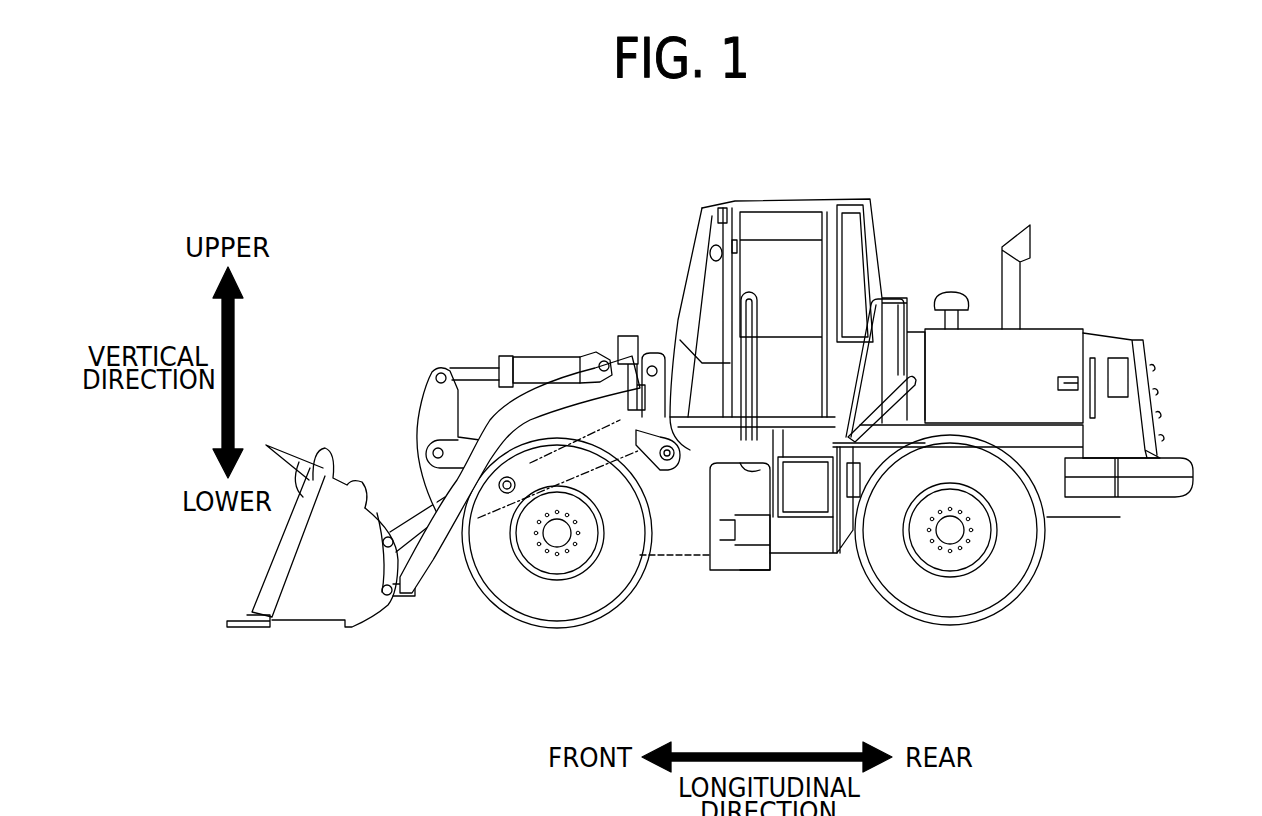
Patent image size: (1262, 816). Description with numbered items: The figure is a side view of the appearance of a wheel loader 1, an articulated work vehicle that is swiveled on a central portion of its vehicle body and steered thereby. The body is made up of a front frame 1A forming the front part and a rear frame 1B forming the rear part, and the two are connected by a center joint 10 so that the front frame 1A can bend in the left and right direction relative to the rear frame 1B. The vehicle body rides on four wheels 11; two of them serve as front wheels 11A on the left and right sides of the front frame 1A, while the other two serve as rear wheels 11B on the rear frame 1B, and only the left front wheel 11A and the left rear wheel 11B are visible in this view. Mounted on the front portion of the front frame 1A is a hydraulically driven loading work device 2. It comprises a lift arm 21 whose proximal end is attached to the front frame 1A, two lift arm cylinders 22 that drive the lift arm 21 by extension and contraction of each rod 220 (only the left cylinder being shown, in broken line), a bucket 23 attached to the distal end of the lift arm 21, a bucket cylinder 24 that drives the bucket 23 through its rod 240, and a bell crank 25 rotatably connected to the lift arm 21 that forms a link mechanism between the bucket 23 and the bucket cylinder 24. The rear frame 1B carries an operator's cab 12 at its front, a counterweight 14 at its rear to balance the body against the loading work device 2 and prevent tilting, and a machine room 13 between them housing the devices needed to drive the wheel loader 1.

The wheel loader 1 is at (388, 206).
The front frame 1A is at (547, 262).
The rear frame 1B is at (958, 203).
The loading work device 2 is at (417, 618).
The center joint 10 is at (735, 577).
The wheel 11 is at (753, 565).
The front wheel 11A is at (595, 607).
The rear wheel 11B is at (945, 615).
The operator's cab 12 is at (720, 205).
The machine room 13 is at (1062, 338).
The counterweight 14 is at (1190, 495).
The lift arm 21 is at (430, 553).
The lift arm cylinder 22 is at (603, 477).
The rod 220 is at (532, 480).
The bucket 23 is at (308, 612).
The bucket cylinder 24 is at (556, 360).
The rod 240 is at (470, 373).
The bell crank 25 is at (432, 431).